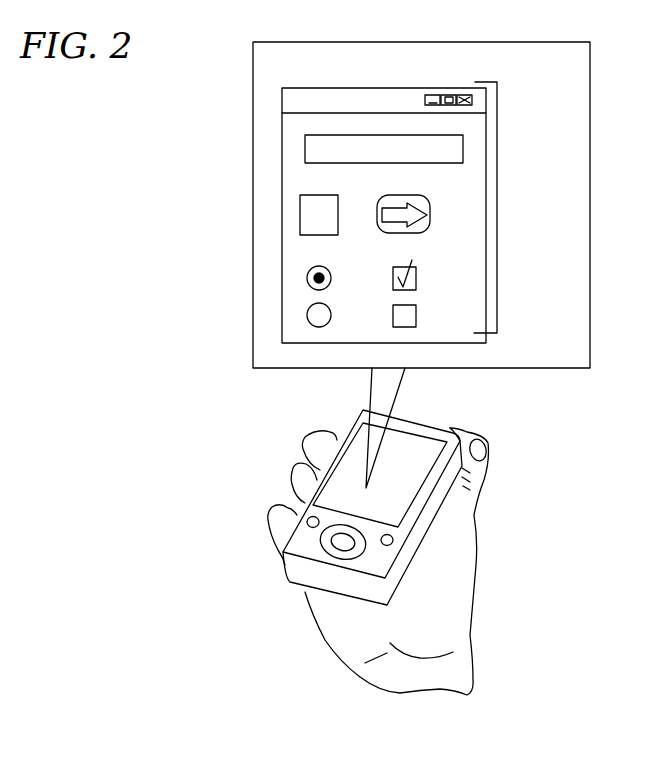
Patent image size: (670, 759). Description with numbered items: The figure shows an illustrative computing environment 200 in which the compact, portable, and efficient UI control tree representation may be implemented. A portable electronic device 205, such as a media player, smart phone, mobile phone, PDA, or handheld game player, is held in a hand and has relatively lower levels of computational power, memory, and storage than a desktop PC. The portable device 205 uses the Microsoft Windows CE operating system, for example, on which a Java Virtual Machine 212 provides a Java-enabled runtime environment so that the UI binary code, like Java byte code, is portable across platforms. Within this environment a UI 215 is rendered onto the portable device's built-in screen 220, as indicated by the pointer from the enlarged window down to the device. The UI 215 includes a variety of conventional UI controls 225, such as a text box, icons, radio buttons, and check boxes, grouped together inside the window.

The computing environment 200 is at (186, 314).
The portable electronic device 205 is at (437, 424).
The Java Virtual Machine 212 is at (590, 70).
The UI 215 is at (300, 88).
The screen 220 is at (357, 450).
The UI controls 225 is at (497, 207).